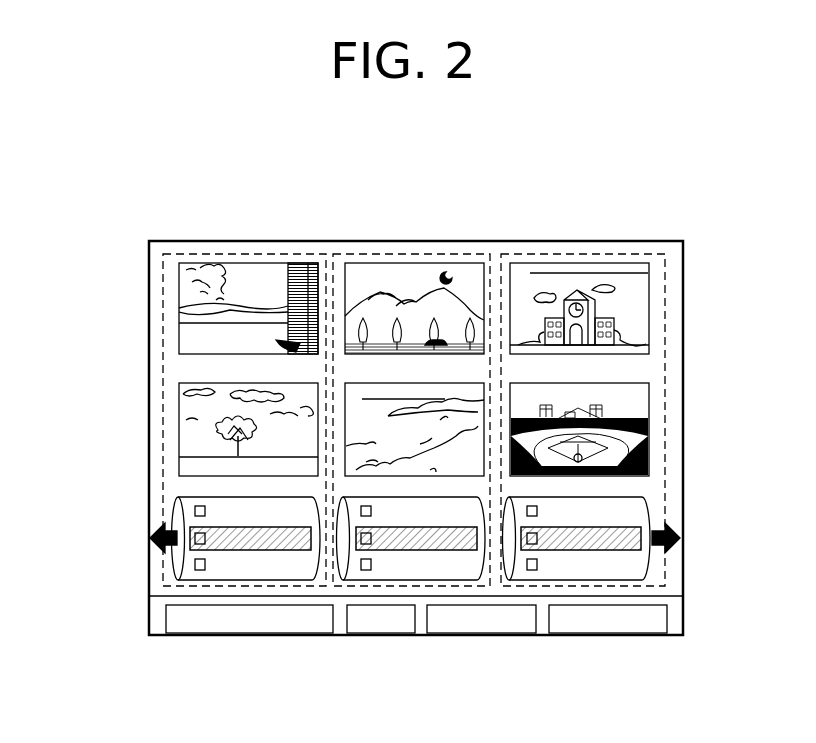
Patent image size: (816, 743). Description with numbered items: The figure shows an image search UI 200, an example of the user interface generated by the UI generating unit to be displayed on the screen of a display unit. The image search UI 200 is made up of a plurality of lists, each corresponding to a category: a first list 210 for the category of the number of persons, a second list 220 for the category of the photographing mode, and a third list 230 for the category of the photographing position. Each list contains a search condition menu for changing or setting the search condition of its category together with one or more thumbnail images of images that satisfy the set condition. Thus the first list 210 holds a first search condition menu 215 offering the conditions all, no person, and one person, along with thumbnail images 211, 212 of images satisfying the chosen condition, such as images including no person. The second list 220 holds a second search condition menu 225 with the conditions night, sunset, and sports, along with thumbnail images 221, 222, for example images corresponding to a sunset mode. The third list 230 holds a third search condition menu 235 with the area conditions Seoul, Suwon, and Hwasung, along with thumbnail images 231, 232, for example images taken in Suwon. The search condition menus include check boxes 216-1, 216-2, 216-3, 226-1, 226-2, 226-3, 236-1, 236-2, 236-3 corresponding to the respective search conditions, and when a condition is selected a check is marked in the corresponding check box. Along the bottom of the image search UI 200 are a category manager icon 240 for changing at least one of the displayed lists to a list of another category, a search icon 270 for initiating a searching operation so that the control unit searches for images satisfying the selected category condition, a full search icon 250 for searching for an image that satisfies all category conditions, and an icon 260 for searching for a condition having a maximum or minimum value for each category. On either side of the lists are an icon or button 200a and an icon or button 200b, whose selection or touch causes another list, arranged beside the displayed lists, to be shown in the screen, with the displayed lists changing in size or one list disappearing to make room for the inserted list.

The image search UI 200 is at (672, 241).
The icon or button 200a is at (150, 538).
The icon or button 200b is at (680, 538).
The first list 210 is at (256, 254).
The thumbnail image 211 is at (179, 294).
The thumbnail image 212 is at (179, 440).
The first search condition menu 215 is at (172, 518).
The check box 216-1 is at (196, 506).
The check box 216-2 is at (195, 540).
The check box 216-3 is at (195, 566).
The second list 220 is at (412, 254).
The thumbnail image 221 is at (465, 263).
The thumbnail image 222 is at (484, 383).
The second search condition menu 225 is at (410, 580).
The check box 226-1 is at (361, 511).
The check box 226-2 is at (361, 538).
The check box 226-3 is at (361, 565).
The third list 230 is at (580, 254).
The thumbnail image 231 is at (650, 298).
The thumbnail image 232 is at (650, 398).
The third search condition menu 235 is at (650, 516).
The check box 236-1 is at (537, 506).
The check box 236-2 is at (537, 540).
The check box 236-3 is at (532, 570).
The category manager icon 240 is at (176, 633).
The full search icon 250 is at (470, 633).
The icon 260 is at (660, 633).
The search icon 270 is at (378, 633).